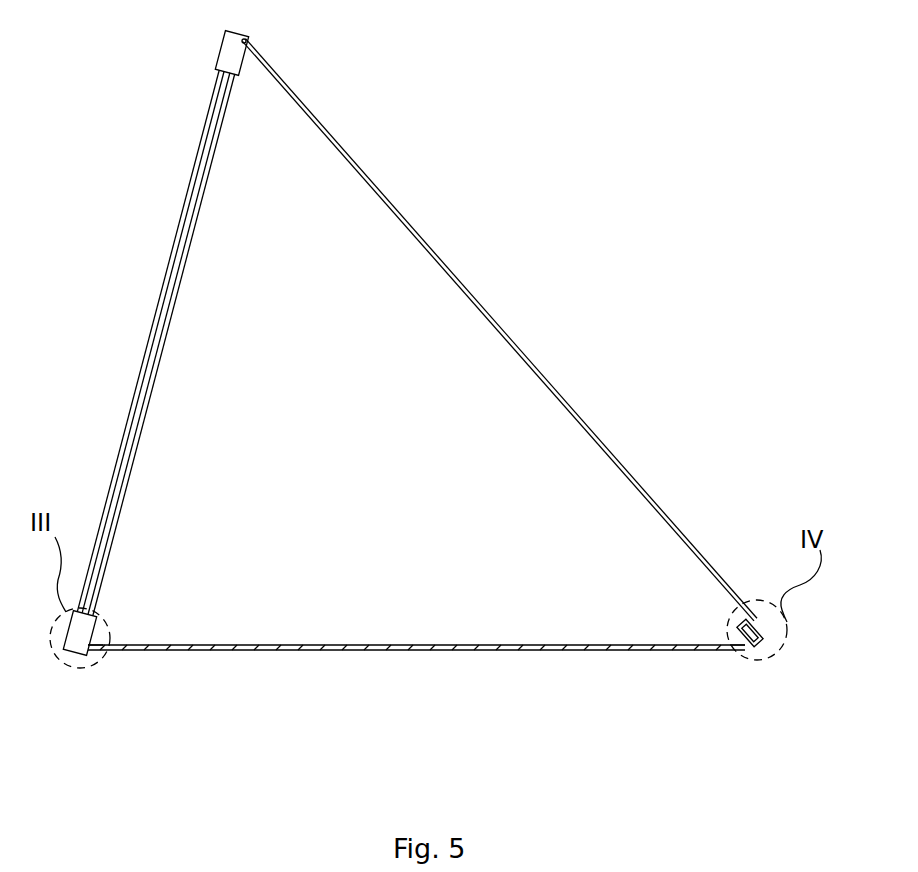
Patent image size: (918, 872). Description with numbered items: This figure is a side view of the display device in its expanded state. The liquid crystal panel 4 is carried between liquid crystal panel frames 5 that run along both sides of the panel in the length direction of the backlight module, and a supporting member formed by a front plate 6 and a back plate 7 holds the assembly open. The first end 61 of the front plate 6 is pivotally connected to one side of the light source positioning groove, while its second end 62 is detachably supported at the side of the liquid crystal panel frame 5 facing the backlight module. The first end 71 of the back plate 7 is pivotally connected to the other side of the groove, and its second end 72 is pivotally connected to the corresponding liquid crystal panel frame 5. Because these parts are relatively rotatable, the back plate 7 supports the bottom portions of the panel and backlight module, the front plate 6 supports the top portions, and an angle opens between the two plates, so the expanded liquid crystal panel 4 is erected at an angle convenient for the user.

The liquid crystal panel 4 is at (155, 335).
The liquid crystal panel frame 5 is at (226, 53).
The front plate 6 is at (445, 268).
The back plate 7 is at (335, 645).
The first end of the front plate 61 is at (755, 555).
The second end of the front plate 62 is at (270, 42).
The first end of the back plate 71 is at (708, 622).
The second end of the back plate 72 is at (130, 632).